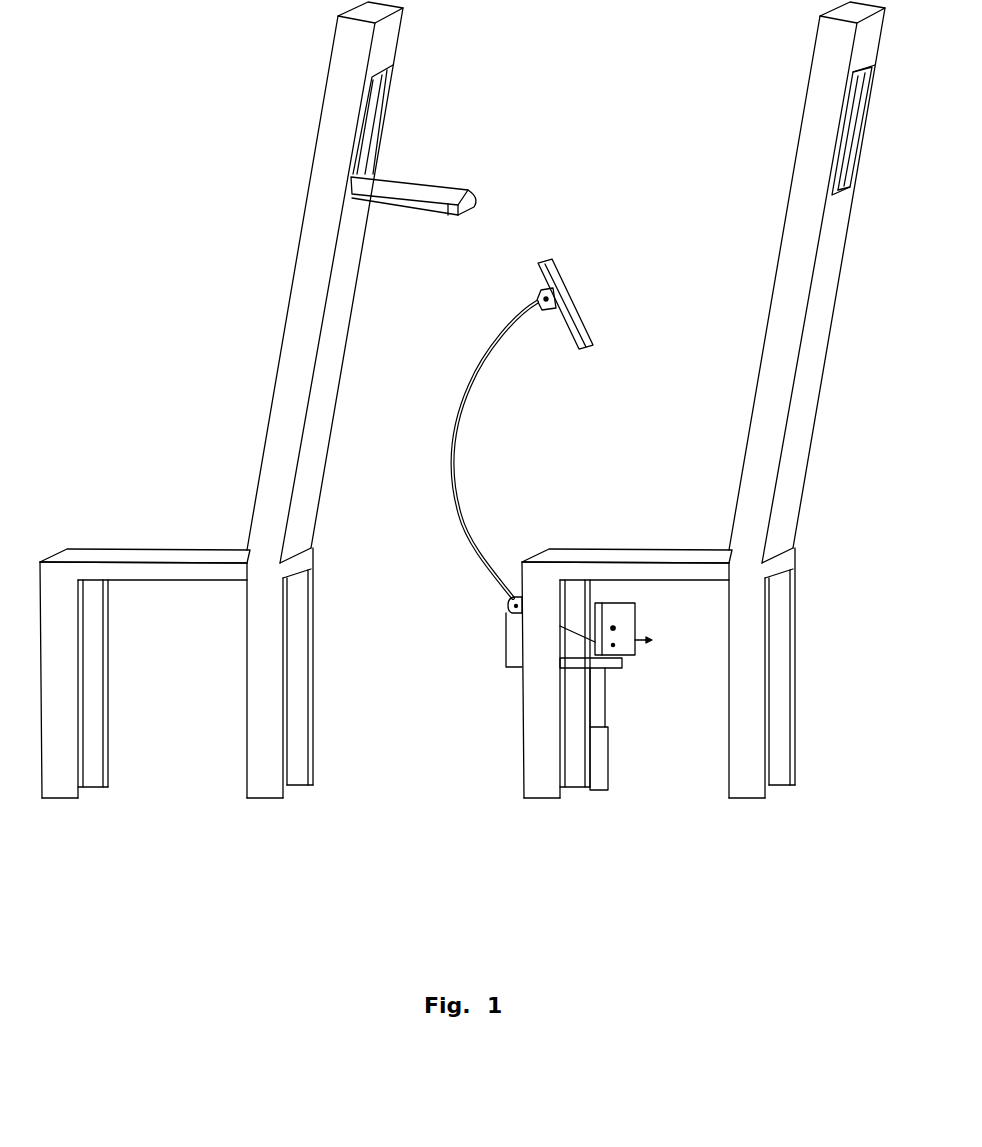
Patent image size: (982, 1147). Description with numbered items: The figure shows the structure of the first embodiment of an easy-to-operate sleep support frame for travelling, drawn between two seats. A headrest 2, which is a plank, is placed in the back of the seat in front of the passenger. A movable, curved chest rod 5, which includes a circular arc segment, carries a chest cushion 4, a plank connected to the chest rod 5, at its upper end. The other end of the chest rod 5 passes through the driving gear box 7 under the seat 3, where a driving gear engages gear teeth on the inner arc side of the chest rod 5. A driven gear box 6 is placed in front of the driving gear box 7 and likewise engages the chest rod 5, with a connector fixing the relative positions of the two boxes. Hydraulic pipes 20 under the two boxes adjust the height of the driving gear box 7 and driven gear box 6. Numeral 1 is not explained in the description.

The first seat 1 is at (338, 77).
The headrest 2 is at (403, 185).
The seat 3 is at (823, 112).
The chest cushion 4 is at (572, 298).
The chest rod 5 is at (455, 413).
The driven gear box 6 is at (508, 607).
The driving gear box 7 is at (631, 653).
The hydraulic pipes 20 is at (605, 742).